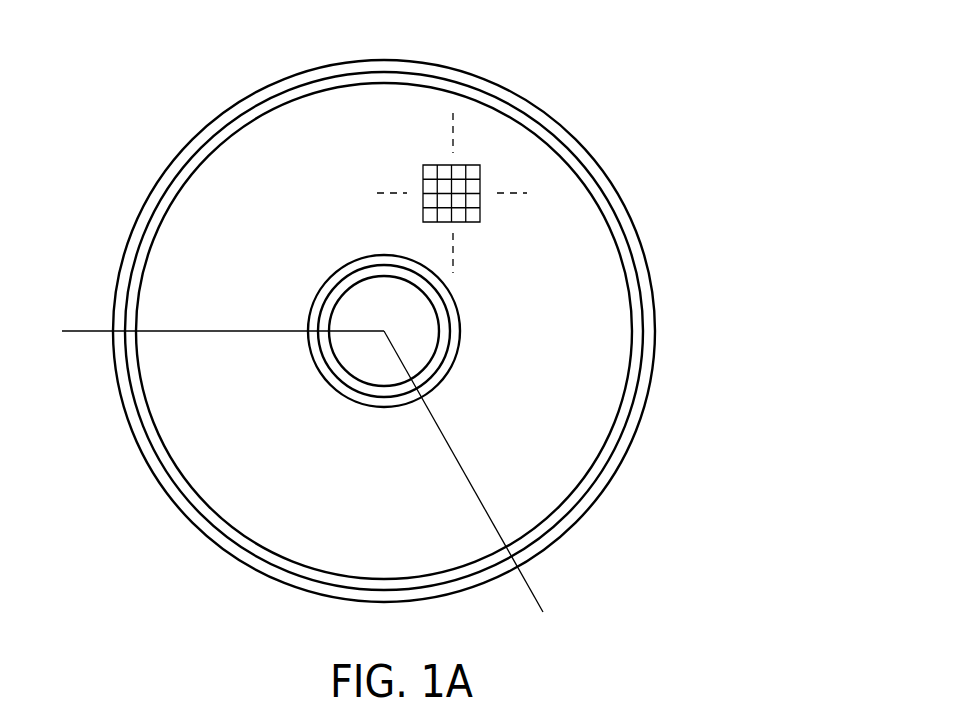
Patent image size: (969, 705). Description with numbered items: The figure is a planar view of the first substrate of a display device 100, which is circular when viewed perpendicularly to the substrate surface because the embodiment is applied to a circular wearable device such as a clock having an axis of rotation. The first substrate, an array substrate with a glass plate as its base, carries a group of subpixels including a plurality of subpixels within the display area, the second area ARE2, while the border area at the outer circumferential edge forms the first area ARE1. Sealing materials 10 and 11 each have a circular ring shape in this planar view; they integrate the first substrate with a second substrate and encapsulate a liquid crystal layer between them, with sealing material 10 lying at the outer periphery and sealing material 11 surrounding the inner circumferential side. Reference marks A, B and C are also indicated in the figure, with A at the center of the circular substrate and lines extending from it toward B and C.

The display device 100 is at (585, 66).
The sealing material 10 is at (583, 174).
The sealing material 11 is at (456, 340).
The first area ARE1 is at (623, 218).
The second area ARE2 is at (607, 266).
The center point A is at (384, 320).
The point B is at (472, 480).
The point C is at (213, 335).